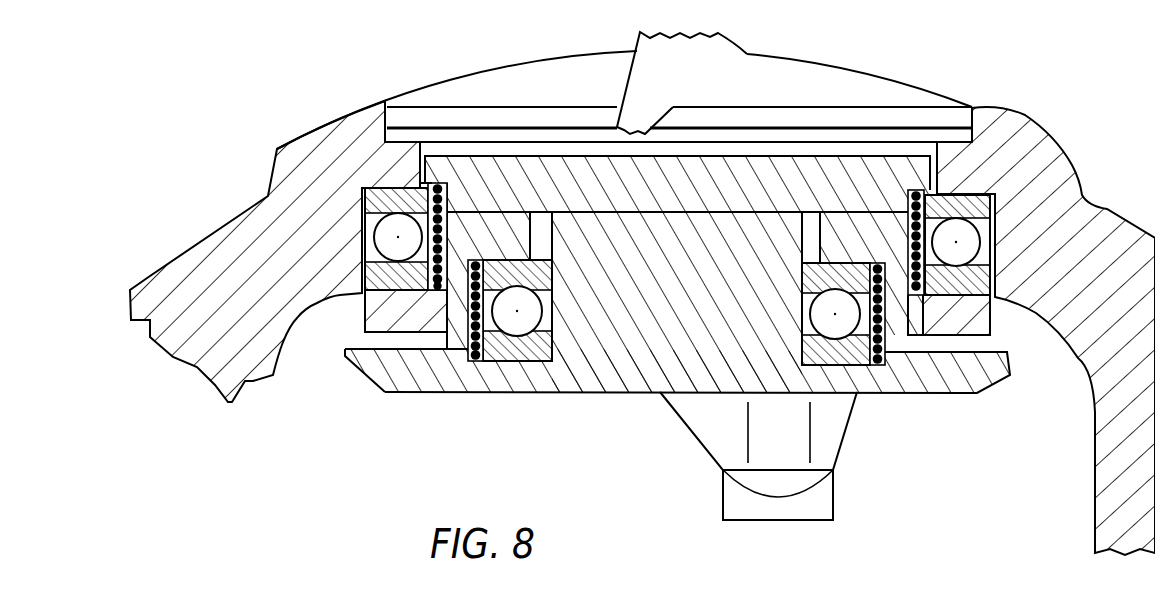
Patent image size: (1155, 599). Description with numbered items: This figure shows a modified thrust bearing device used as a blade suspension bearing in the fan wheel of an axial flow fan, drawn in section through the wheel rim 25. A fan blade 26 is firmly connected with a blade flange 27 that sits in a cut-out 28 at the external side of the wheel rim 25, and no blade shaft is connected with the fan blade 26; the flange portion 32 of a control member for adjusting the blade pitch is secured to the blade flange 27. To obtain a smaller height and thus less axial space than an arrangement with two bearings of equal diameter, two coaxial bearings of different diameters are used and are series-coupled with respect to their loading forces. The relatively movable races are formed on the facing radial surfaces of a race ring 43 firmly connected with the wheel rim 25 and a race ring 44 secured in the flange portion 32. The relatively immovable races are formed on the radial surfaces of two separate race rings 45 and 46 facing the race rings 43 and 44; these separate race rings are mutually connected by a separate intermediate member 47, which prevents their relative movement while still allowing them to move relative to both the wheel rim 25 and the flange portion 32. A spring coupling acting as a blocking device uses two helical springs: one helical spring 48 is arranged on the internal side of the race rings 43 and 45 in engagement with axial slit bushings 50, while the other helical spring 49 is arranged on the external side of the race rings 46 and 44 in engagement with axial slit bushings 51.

The wheel rim 25 is at (1072, 183).
The fan blade 26 is at (805, 77).
The blade flange 27 is at (480, 170).
The cut-out 28 is at (442, 140).
The flange portion 32 is at (386, 375).
The race ring 43 is at (377, 200).
The race ring 44 is at (503, 352).
The separate race ring 45 is at (372, 302).
The separate race ring 46 is at (557, 277).
The intermediate member 47 is at (352, 353).
The helical spring 48 is at (943, 192).
The helical spring 49 is at (878, 348).
The axial slit bushings 50 is at (985, 197).
The axial slit bushings 51 is at (848, 338).